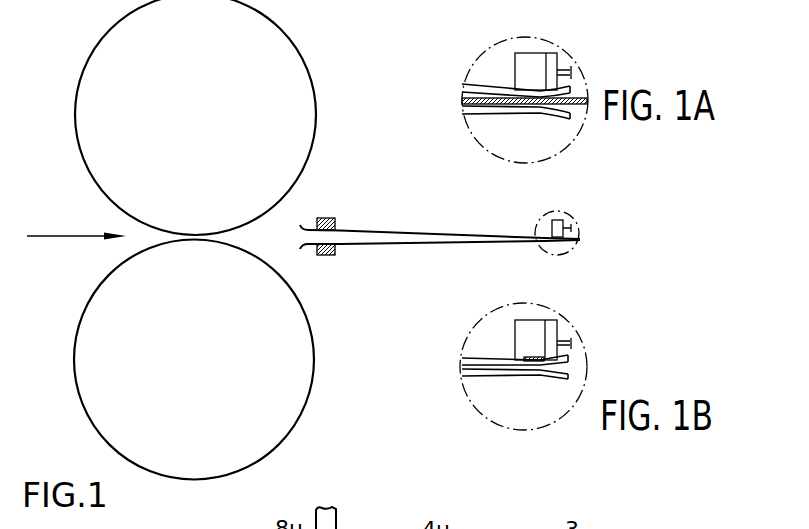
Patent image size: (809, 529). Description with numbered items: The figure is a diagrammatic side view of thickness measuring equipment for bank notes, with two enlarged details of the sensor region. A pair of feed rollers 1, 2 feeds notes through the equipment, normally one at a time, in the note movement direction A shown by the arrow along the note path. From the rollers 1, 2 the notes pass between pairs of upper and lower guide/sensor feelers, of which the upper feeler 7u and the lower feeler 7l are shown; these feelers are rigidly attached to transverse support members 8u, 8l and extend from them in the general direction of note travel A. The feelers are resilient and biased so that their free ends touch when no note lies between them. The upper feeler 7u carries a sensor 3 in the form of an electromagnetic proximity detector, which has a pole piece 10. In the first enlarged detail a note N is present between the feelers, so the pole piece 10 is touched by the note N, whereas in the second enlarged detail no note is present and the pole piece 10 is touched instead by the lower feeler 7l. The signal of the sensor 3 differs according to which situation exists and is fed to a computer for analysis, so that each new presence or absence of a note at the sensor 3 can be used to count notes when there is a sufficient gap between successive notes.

In FIG. 1, the feed roller 1 is at (312, 149).
In FIG. 1, the feed roller 2 is at (309, 404).
In FIG. 1, the sensor 3 is at (560, 215).
In FIG. 1, the upper guide/sensor feeler 7u is at (410, 230).
In FIG. 1A, the upper guide/sensor feeler 7u is at (488, 84).
In FIG. 1B, the upper guide/sensor feeler 7u is at (487, 357).
In FIG. 1, the lower guide/sensor feeler 7l is at (407, 246).
In FIG. 1A, the lower guide/sensor feeler 7l is at (492, 118).
In FIG. 1B, the lower guide/sensor feeler 7l is at (500, 377).
In FIG. 1, the upper transverse support member 8u is at (325, 217).
In FIG. 1, the lower transverse support member 8l is at (337, 253).
In FIG. 1A, the pole piece 10 is at (541, 90).
In FIG. 1B, the pole piece 10 is at (540, 360).
In FIG. 1A, the note N is at (564, 106).
In FIG. 1, the note movement direction A is at (76, 223).